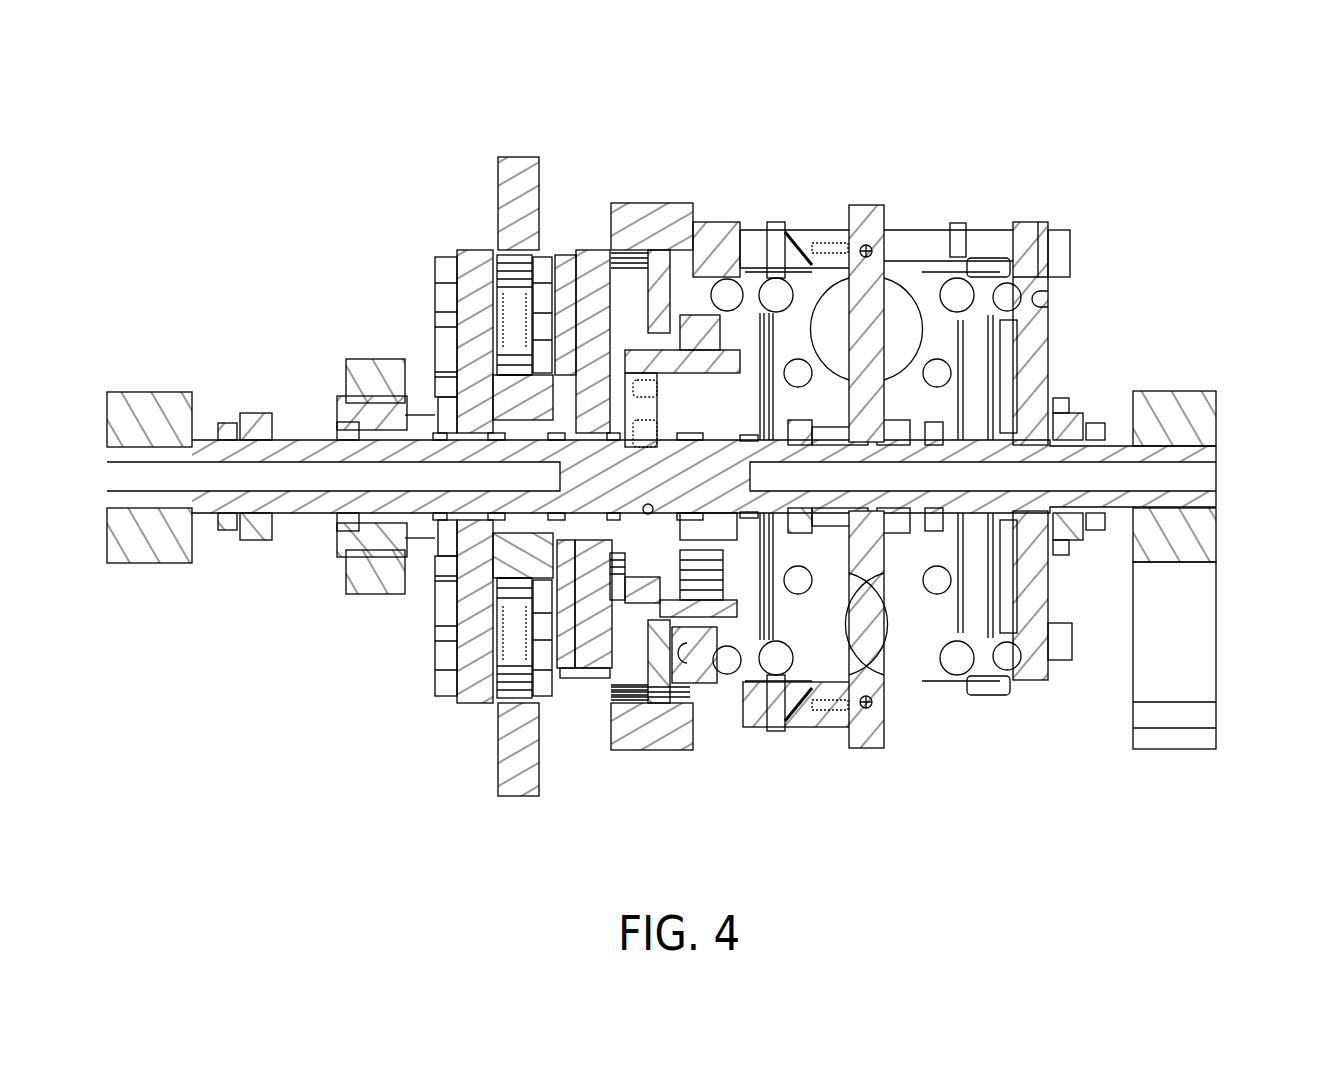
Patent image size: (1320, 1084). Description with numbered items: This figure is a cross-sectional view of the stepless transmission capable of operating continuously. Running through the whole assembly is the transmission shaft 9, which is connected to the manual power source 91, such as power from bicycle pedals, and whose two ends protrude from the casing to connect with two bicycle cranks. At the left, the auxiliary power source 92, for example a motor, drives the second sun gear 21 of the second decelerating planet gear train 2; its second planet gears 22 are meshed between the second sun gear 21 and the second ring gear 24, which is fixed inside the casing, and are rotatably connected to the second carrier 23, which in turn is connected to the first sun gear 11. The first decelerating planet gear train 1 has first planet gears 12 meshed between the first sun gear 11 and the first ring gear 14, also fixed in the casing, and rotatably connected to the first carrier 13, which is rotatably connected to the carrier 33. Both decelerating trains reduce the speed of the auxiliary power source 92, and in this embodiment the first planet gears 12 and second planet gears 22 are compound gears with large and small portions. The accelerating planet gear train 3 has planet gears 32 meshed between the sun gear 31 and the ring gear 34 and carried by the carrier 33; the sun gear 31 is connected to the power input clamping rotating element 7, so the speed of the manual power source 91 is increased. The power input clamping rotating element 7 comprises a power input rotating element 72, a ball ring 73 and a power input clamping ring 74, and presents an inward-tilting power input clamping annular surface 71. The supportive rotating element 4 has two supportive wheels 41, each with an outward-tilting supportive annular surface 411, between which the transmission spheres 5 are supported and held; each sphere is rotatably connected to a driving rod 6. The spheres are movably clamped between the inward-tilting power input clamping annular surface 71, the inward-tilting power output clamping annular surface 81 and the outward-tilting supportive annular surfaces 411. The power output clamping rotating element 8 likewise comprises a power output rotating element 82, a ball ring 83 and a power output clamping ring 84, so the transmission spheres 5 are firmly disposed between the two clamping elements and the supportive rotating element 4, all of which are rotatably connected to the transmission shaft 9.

The first decelerating planet gear train 1 is at (553, 839).
The first sun gear 11 is at (565, 600).
The first planet gears 12 is at (625, 663).
The first carrier 13 is at (597, 628).
The first ring gear 14 is at (700, 640).
The second decelerating planet gear train 2 is at (620, 94).
The second sun gear 21 is at (453, 372).
The second planet gears 22 is at (473, 280).
The second carrier 23 is at (548, 325).
The second ring gear 24 is at (520, 172).
The accelerating planet gear train 3 is at (880, 94).
The sun gear 31 is at (740, 280).
The planet gears 32 is at (720, 340).
The carrier 33 is at (667, 335).
The ring gear 34 is at (705, 287).
The supportive rotating element 4 is at (1060, 94).
The supportive wheels 41 is at (772, 228).
The outward-tilting supportive annular surface 411 is at (838, 240).
The transmission spheres 5 is at (912, 305).
The driving rods 6 is at (866, 213).
The power input clamping rotating element 7 is at (775, 839).
The inward-tilting power input clamping annular surface 71 is at (890, 650).
The power input rotating element 72 is at (753, 660).
The ball ring 73 is at (807, 660).
The power input clamping ring 74 is at (863, 650).
The power output clamping rotating element 8 is at (920, 764).
The inward-tilting power output clamping annular surface 81 is at (900, 645).
The power output rotating element 82 is at (1017, 660).
The ball ring 83 is at (987, 660).
The power output clamping ring 84 is at (940, 645).
The transmission shaft 9 is at (1197, 497).
The manual power source 91 is at (1197, 643).
The auxiliary power source 92 is at (362, 640).